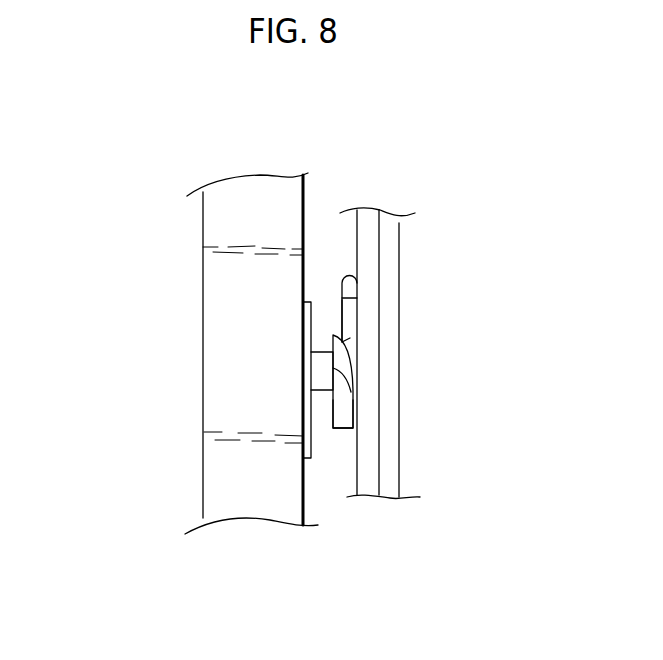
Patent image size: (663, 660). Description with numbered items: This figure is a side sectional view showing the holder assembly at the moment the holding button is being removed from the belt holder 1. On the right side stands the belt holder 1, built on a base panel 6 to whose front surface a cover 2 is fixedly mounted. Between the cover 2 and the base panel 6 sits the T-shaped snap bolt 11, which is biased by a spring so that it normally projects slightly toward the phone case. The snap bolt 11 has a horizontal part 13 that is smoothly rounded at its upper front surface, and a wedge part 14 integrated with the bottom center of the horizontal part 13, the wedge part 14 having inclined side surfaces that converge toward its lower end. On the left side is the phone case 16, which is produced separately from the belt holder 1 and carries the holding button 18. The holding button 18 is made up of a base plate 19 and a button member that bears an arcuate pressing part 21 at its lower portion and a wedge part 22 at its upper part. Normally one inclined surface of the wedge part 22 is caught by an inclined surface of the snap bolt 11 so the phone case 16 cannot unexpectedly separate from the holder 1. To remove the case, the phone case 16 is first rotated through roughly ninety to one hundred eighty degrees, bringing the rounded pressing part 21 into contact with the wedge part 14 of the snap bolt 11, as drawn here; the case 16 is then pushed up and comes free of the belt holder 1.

The belt holder 1 is at (447, 217).
The cover 2 is at (372, 483).
The base panel 6 is at (392, 476).
The snap bolt 11 is at (337, 271).
The horizontal part 13 is at (353, 287).
The wedge part 14 is at (411, 375).
The phone case 16 is at (210, 269).
The holding button 18 is at (335, 447).
The base plate 19 is at (303, 408).
The pressing part 21 is at (342, 365).
The wedge part 22 is at (347, 418).